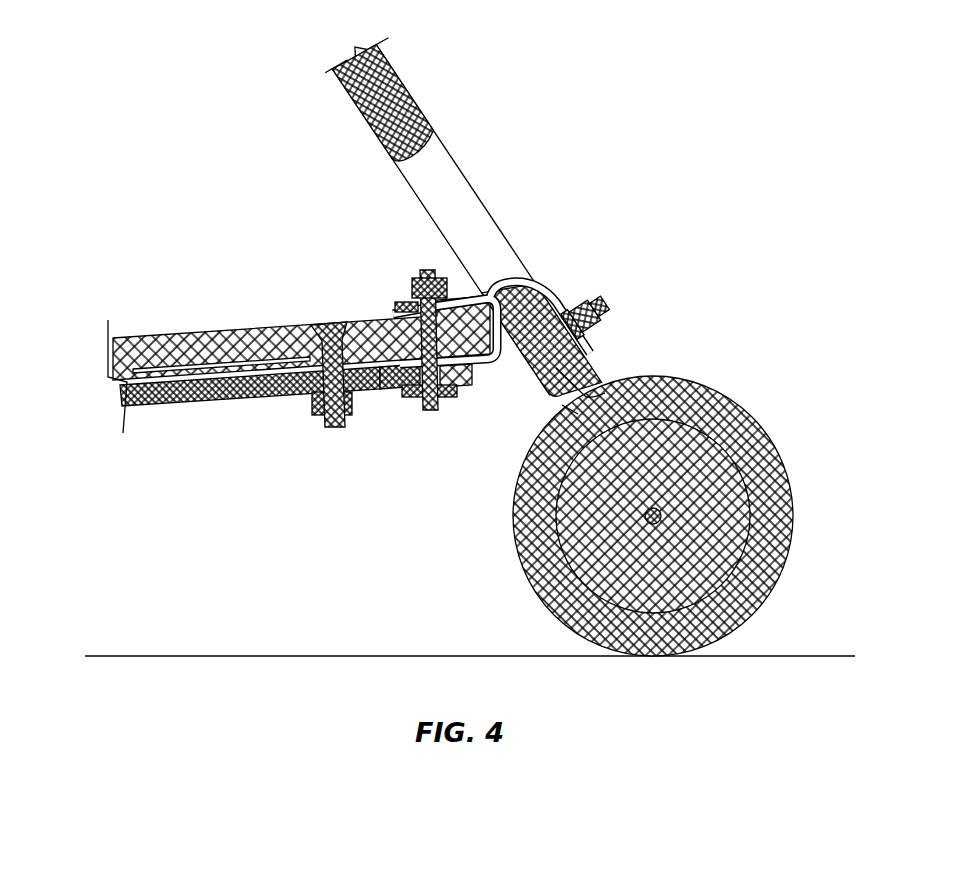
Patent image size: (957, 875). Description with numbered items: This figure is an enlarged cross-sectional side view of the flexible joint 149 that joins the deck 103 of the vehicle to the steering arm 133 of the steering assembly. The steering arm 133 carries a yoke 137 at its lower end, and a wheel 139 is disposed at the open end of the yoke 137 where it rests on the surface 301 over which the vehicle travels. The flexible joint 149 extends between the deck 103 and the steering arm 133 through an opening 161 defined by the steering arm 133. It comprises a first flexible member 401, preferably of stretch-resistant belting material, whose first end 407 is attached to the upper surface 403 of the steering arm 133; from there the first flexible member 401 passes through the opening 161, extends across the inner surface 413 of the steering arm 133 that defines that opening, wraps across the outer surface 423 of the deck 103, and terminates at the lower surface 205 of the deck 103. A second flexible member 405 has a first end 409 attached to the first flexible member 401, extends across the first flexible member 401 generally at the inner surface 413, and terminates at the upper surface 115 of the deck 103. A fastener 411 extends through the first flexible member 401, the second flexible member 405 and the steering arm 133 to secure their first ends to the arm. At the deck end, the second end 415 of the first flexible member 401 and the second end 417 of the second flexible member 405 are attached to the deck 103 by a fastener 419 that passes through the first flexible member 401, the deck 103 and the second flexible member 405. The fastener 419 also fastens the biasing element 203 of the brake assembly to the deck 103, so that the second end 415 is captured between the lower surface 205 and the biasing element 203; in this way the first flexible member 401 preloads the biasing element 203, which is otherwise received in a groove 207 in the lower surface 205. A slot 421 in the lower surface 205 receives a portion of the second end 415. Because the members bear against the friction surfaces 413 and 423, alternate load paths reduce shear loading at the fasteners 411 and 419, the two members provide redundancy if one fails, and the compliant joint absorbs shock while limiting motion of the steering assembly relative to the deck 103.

The deck 103 is at (150, 335).
The upper surface 115 is at (168, 335).
The steering arm 133 is at (400, 77).
The yoke 137 is at (588, 386).
The wheel 139 is at (767, 473).
The flexible joint 149 is at (545, 275).
The opening 161 is at (453, 193).
The biasing element 203 is at (150, 393).
The lower surface 205 is at (307, 394).
The groove 207 is at (214, 374).
The surface 301 is at (205, 655).
The first flexible member 401 is at (480, 382).
The upper surface 403 is at (450, 147).
The second flexible member 405 is at (447, 248).
The first end 407 is at (548, 404).
The first end 409 is at (596, 340).
The fastener 411 is at (598, 303).
The inner surface 413 is at (522, 277).
The second end 415 is at (413, 397).
The second end 417 is at (397, 300).
The fastener 419 is at (460, 294).
The slot 421 is at (385, 374).
The outer surface 423 is at (556, 292).